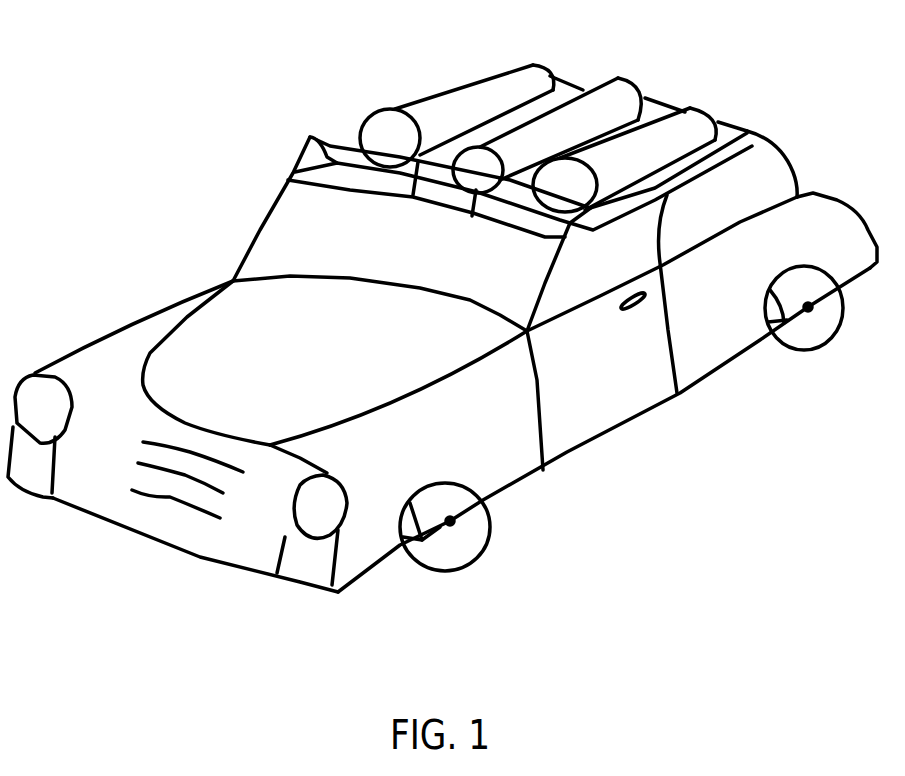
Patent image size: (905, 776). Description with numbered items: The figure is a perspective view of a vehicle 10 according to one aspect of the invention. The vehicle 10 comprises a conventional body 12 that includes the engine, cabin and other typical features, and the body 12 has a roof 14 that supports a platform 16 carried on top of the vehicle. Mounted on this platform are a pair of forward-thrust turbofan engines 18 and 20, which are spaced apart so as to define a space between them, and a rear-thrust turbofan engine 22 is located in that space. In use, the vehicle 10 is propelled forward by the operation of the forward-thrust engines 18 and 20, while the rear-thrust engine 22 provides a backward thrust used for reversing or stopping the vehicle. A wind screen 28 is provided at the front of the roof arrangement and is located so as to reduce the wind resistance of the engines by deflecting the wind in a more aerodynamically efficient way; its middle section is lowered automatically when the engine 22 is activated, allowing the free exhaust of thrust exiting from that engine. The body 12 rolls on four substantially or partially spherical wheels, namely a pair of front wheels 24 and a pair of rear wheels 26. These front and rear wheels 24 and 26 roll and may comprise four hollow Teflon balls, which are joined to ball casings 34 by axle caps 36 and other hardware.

The vehicle 10 is at (162, 303).
The body 12 is at (613, 417).
The roof 14 is at (317, 188).
The platform 16 is at (658, 108).
The forward-thrust turbofan engine 18 is at (455, 108).
The forward-thrust turbofan engine 20 is at (703, 118).
The rear-thrust turbofan engine 22 is at (617, 87).
The front wheels 24 is at (467, 533).
The rear wheels 26 is at (813, 330).
The wind screen 28 is at (303, 160).
The ball casings 34 is at (410, 540).
The axle caps 36 is at (457, 520).